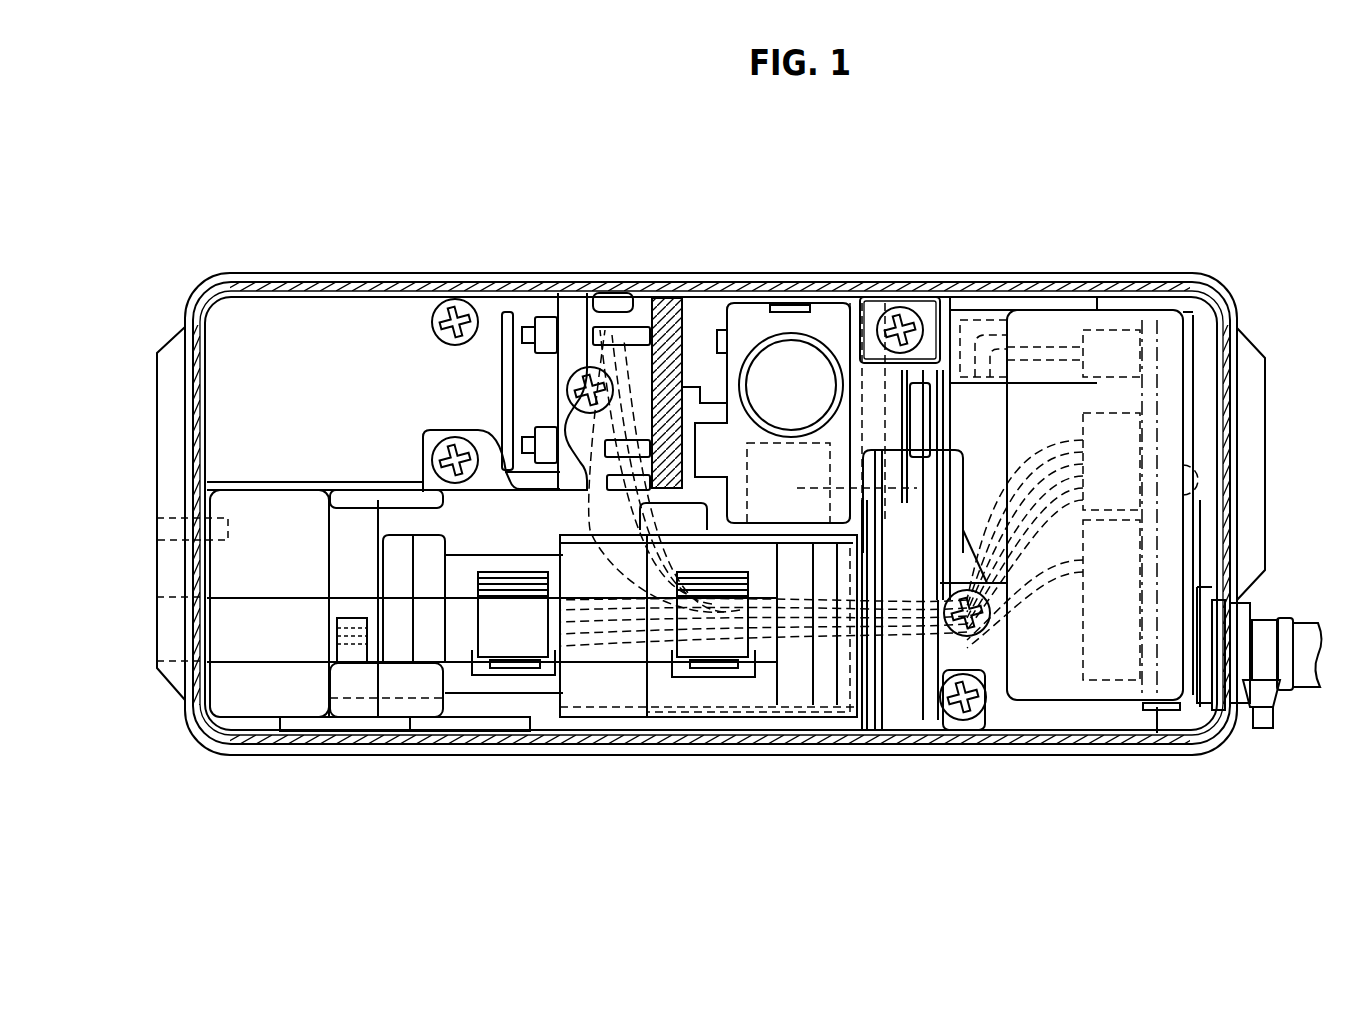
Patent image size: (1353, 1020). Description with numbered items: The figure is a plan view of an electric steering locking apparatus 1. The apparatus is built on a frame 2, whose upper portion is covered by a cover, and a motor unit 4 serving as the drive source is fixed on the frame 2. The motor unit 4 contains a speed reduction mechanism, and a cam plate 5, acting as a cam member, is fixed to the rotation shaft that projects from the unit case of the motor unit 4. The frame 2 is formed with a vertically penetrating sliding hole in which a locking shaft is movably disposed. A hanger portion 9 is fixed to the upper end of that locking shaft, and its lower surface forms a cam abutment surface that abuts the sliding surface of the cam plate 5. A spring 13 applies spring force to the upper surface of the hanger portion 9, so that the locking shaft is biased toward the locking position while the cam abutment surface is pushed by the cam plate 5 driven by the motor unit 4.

The electric steering locking apparatus 1 is at (335, 230).
The frame 2 is at (143, 388).
The motor unit 4 is at (748, 718).
The cam plate 5 is at (870, 365).
The hanger portion 9 is at (823, 316).
The spring 13 is at (757, 300).